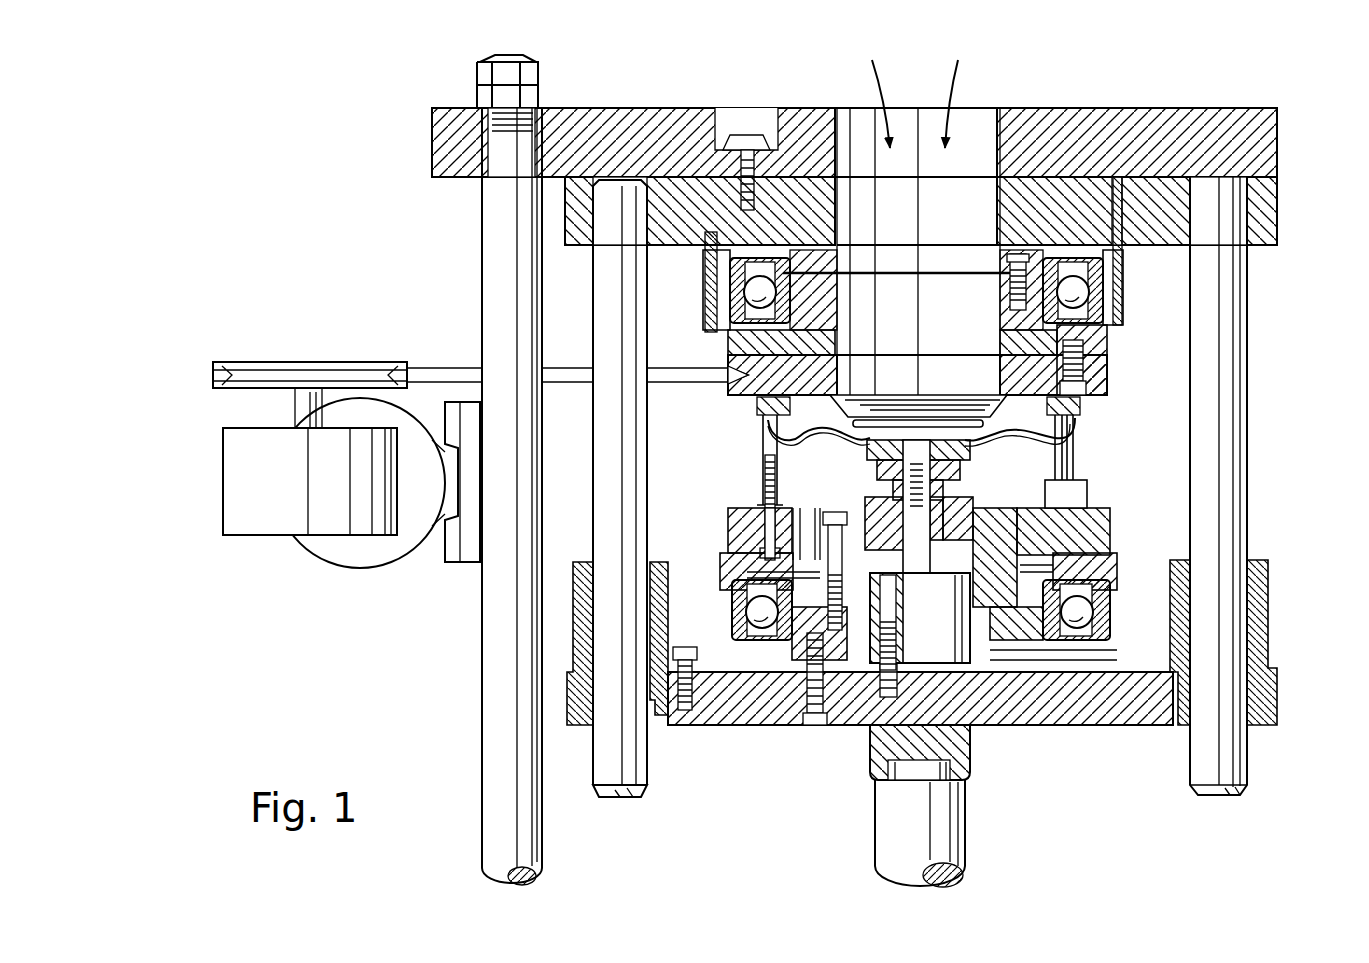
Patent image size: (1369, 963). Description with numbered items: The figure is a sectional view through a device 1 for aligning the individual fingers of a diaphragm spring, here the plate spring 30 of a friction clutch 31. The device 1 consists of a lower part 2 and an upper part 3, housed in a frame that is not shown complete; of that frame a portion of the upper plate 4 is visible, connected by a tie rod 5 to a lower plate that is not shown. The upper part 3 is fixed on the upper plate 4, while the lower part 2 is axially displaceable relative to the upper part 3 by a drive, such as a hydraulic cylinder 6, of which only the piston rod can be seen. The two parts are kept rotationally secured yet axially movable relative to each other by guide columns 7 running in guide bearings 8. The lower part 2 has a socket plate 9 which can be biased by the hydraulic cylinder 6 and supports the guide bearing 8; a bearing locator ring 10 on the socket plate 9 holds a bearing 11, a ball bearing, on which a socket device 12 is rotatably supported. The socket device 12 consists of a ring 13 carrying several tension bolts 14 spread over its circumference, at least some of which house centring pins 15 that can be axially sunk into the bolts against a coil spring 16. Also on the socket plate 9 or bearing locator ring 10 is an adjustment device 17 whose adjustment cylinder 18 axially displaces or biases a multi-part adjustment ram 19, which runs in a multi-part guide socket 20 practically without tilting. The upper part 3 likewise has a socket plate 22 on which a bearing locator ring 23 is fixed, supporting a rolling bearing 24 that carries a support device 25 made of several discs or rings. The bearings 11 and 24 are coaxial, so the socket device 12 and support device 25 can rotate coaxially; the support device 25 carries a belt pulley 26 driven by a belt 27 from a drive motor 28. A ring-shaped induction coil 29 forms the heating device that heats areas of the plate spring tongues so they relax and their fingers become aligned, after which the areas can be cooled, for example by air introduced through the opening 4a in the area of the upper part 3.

The device 1 is at (440, 634).
The lower part 2 is at (775, 739).
The upper part 3 is at (1062, 94).
The upper plate 4 is at (652, 126).
The opening 4a is at (971, 224).
The tie rod 5 is at (500, 282).
The hydraulic cylinder 6 is at (909, 840).
The guide columns 7 is at (1228, 336).
The guide bearings 8 is at (1263, 578).
The socket plate 9 is at (1058, 726).
The bearing locator ring 10 is at (785, 657).
The bearing 11 is at (1090, 609).
The socket device 12 is at (1112, 506).
The ring 13 is at (733, 536).
The tension bolts 14 is at (1068, 456).
The centring pins 15 is at (760, 440).
The coil spring 16 is at (768, 472).
The adjustment device 17 is at (1014, 506).
The adjustment cylinder 18 is at (941, 628).
The adjustment ram 19 is at (938, 506).
The guide socket 20 is at (945, 540).
The socket plate 22 is at (1267, 208).
The bearing locator ring 23 is at (1124, 268).
The rolling bearing 24 is at (1080, 296).
The support device 25 is at (1096, 320).
The belt pulley 26 is at (1108, 386).
The belt 27 is at (440, 370).
The drive motor 28 is at (273, 494).
The induction coil 29 is at (855, 440).
The plate spring 30 is at (868, 445).
The friction clutch 31 is at (1078, 423).